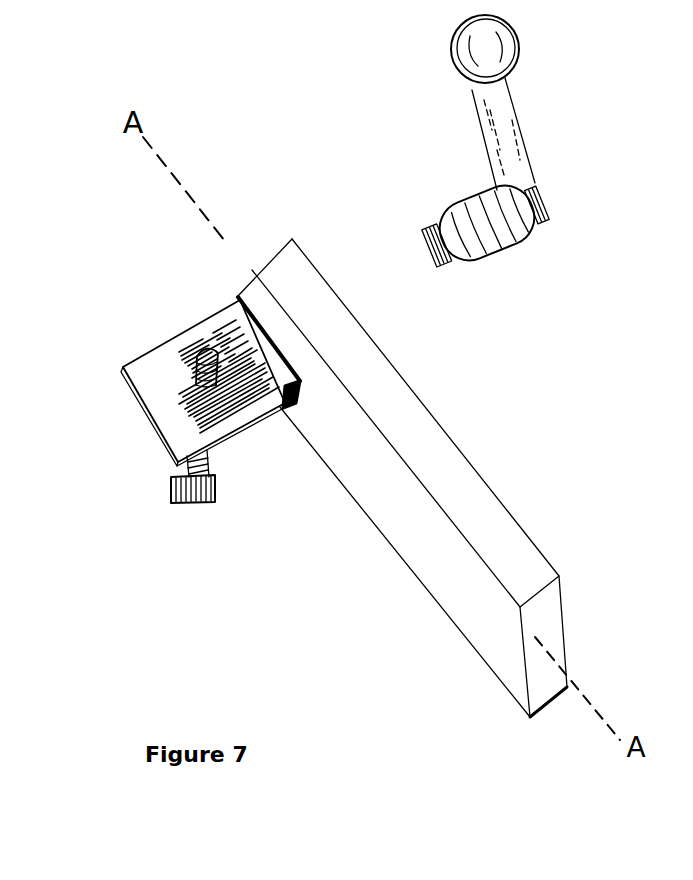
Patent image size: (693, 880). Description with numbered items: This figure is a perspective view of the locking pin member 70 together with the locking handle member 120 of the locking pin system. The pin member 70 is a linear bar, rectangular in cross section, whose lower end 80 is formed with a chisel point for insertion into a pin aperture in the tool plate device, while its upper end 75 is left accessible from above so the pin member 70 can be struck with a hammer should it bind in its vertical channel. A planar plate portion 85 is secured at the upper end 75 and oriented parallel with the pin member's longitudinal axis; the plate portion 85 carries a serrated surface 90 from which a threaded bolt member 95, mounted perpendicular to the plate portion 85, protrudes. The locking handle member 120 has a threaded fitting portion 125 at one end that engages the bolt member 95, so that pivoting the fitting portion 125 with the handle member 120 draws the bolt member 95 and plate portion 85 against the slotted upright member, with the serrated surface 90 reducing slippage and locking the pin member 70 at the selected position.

The pin member 70 is at (423, 440).
The upper end 75 is at (258, 298).
The lower end 80 is at (517, 670).
The plate portion 85 is at (167, 367).
The serrated surface 90 is at (176, 386).
The threaded bolt member 95 is at (221, 366).
The locking handle member 120 is at (523, 150).
The threaded fitting portion 125 is at (452, 260).